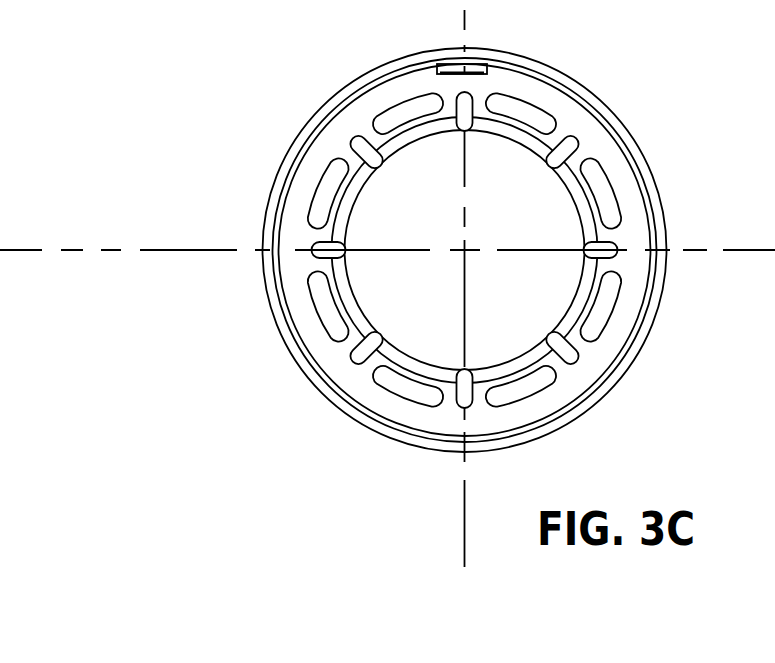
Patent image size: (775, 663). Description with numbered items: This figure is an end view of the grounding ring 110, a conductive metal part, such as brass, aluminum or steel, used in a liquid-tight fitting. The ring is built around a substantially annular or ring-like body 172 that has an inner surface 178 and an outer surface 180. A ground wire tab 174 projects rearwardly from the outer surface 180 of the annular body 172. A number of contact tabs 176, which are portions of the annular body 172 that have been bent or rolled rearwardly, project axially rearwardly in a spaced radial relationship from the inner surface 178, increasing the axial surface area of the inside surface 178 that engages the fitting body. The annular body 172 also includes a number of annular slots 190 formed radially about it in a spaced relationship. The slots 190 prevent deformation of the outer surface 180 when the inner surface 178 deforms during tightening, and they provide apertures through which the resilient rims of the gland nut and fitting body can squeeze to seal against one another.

The grounding ring 110 is at (245, 290).
The annular body 172 is at (345, 133).
The ground wire tab 174 is at (463, 61).
The contact tabs 176 is at (440, 377).
The inner surface 178 is at (525, 152).
The outer surface 180 is at (388, 437).
The annular slots 190 is at (518, 103).